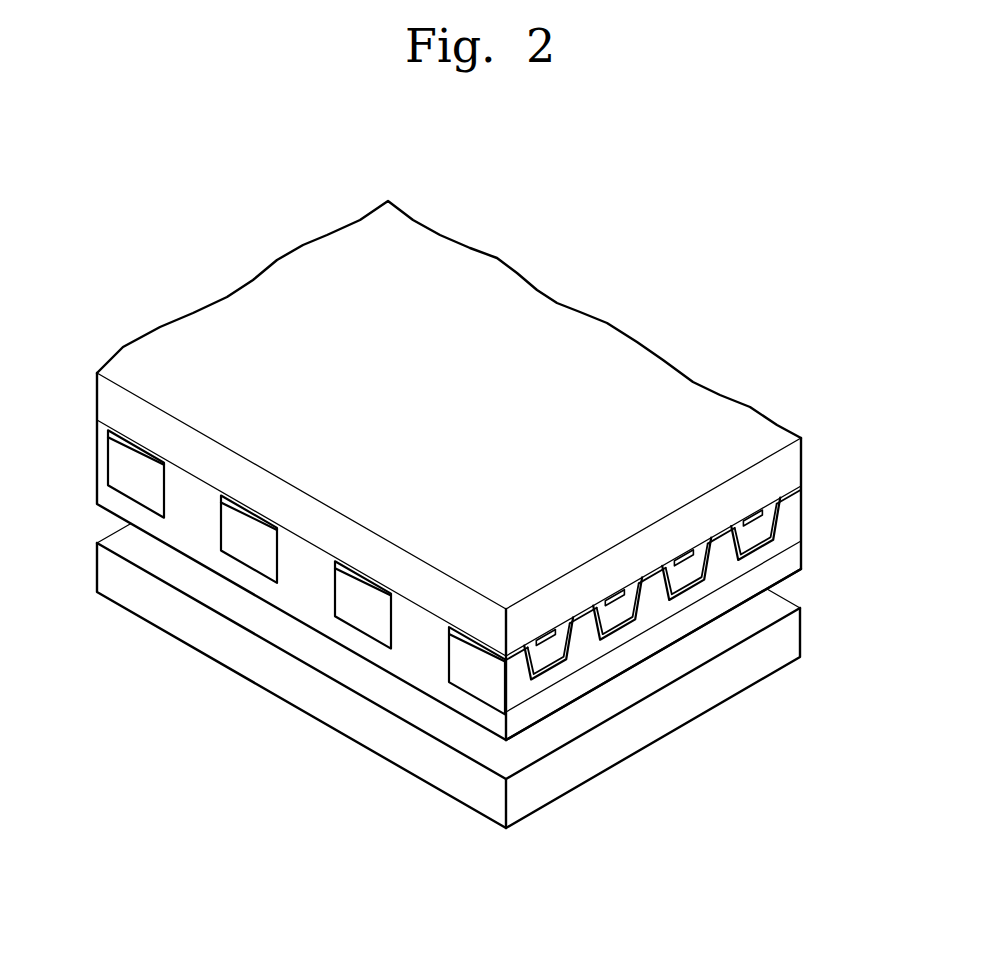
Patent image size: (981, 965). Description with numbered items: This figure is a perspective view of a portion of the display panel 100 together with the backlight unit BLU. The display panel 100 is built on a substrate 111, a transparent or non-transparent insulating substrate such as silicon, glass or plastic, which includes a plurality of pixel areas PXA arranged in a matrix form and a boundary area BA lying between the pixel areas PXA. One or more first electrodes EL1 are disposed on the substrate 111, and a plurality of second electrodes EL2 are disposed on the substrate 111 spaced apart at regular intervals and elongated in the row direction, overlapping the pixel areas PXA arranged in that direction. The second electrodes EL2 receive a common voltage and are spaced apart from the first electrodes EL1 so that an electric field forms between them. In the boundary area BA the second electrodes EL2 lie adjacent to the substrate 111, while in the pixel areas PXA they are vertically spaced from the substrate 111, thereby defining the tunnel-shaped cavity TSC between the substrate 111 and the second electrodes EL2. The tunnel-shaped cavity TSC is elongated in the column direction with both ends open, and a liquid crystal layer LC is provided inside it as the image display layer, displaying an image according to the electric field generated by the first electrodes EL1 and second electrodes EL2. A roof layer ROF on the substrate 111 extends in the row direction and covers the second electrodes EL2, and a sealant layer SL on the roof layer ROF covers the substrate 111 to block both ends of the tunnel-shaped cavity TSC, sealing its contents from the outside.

The display panel 100 is at (88, 373).
The substrate 111 is at (790, 470).
The second electrode EL2 is at (800, 492).
The first electrode EL1 is at (778, 507).
The liquid crystal layer LC is at (768, 525).
The tunnel-shaped cavity TSC is at (775, 538).
The backlight unit BLU is at (787, 643).
The sealant layer SL is at (652, 645).
The roof layer ROF is at (588, 653).
The boundary area BA is at (449, 627).
The pixel area PXA is at (712, 537).